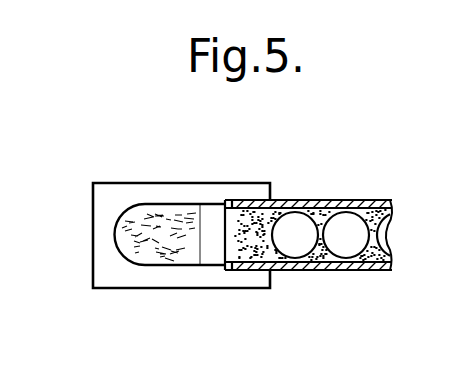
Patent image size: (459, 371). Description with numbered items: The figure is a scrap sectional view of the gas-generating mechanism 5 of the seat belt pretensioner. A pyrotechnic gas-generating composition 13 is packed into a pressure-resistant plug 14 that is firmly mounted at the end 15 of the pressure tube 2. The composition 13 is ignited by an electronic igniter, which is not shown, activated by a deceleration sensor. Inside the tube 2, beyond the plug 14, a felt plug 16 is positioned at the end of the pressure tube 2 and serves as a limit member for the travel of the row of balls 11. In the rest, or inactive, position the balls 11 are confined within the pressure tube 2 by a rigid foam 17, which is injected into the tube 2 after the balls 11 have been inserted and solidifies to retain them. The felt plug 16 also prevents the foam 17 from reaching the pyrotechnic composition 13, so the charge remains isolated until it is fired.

The pressure tube 2 is at (375, 271).
The gas-generating mechanism 5 is at (212, 190).
The balls 11 is at (295, 220).
The pyrotechnic gas-generating composition 13 is at (152, 256).
The pressure-resistant plug 14 is at (122, 212).
The end of the pressure tube 15 is at (290, 261).
The felt plug 16 is at (245, 249).
The rigid foam 17 is at (320, 270).